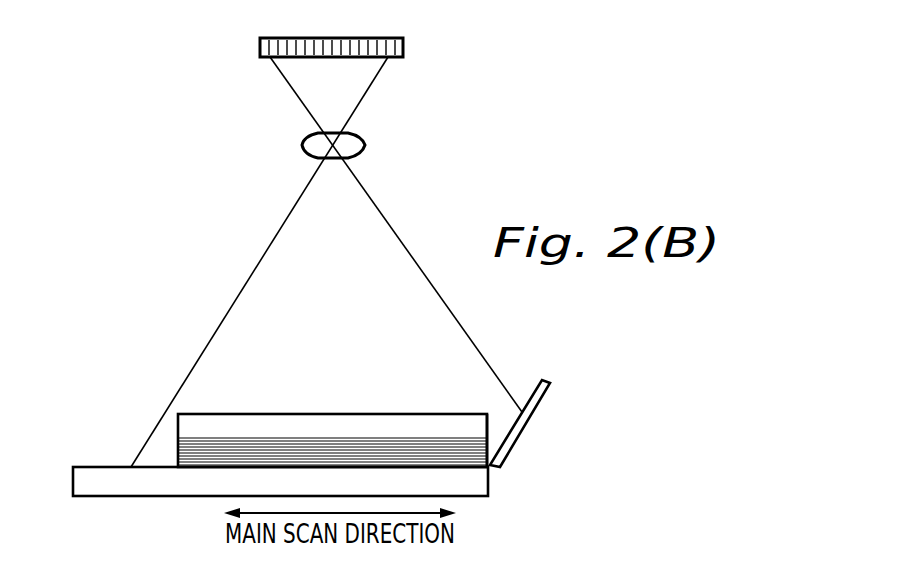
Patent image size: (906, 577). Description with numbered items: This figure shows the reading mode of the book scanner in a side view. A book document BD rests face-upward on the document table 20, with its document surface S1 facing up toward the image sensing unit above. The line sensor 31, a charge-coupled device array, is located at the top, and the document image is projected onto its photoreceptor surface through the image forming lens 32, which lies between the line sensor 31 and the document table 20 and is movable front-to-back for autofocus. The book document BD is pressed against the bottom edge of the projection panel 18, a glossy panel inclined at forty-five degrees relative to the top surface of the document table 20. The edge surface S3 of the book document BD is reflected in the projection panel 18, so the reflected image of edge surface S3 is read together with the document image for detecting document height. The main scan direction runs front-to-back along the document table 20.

The line sensor 31 is at (262, 50).
The image forming lens 32 is at (366, 148).
The document table 20 is at (100, 466).
The projection panel 18 is at (547, 380).
The document surface S1 is at (330, 412).
The book document BD is at (258, 420).
The edge surface S3 is at (492, 415).